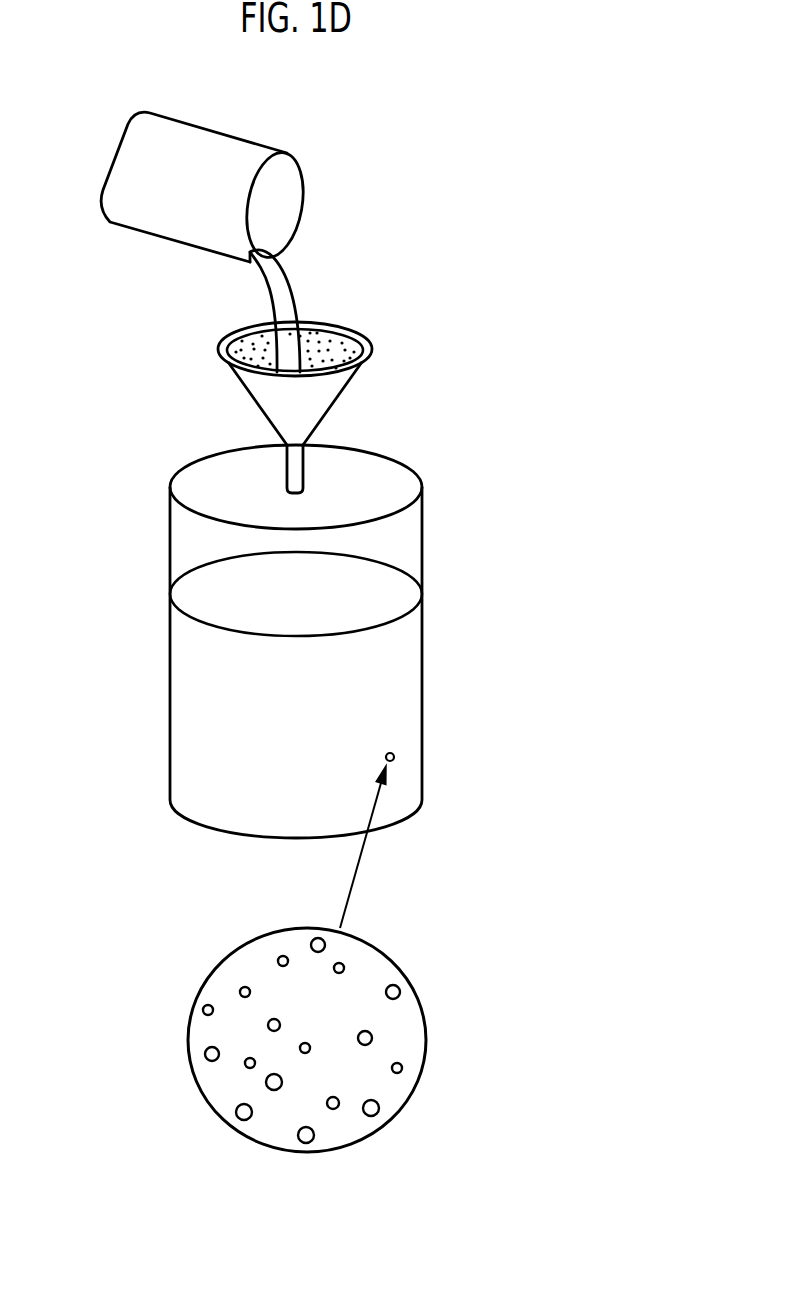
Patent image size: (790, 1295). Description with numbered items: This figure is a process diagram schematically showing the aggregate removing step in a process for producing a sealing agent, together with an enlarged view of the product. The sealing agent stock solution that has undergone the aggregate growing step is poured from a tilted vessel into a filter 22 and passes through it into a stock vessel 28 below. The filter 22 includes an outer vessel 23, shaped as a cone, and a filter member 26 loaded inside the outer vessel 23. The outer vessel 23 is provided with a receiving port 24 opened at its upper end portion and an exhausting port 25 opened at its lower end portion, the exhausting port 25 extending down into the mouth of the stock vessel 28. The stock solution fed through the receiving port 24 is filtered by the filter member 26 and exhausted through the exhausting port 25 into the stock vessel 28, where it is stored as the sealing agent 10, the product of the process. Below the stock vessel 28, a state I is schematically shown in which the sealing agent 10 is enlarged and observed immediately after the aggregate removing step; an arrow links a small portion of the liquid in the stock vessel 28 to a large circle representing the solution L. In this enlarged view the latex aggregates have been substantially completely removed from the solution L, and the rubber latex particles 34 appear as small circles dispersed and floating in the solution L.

The sealing agent 10 is at (383, 583).
The filter 22 is at (340, 368).
The outer vessel 23 is at (240, 400).
The receiving port 24 is at (227, 340).
The exhausting port 25 is at (305, 495).
The filter member 26 is at (333, 347).
The stock vessel 28 is at (176, 808).
The rubber latex particles 34 is at (245, 986).
The solution L is at (350, 1130).
The state I is at (293, 1151).